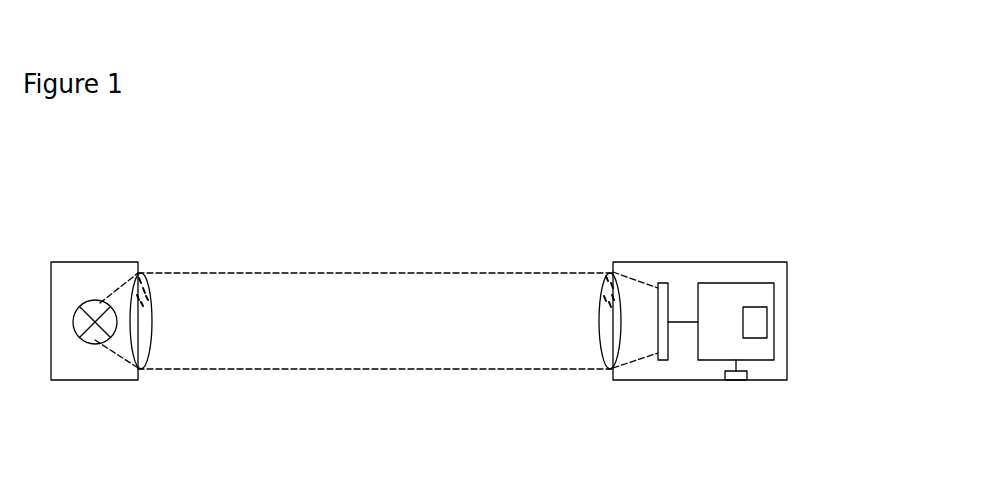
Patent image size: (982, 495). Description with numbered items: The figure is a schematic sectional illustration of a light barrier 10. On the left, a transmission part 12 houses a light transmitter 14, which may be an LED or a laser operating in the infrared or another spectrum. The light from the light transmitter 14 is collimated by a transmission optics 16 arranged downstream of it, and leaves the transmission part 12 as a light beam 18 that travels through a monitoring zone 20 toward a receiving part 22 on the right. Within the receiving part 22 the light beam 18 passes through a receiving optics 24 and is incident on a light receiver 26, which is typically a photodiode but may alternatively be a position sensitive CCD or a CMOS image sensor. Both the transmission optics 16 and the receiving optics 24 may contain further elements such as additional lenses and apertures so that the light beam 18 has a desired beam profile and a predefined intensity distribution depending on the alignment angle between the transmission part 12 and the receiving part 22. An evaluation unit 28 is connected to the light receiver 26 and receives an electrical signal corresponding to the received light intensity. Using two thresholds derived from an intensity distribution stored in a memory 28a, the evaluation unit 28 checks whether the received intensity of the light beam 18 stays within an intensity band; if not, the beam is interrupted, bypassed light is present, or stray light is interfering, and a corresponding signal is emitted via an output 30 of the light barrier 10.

The light barrier 10 is at (498, 203).
The transmission part 12 is at (83, 262).
The light transmitter 14 is at (83, 338).
The transmission optics 16 is at (148, 350).
The light beam 18 is at (270, 273).
The monitoring zone 20 is at (348, 302).
The receiving part 22 is at (635, 262).
The receiving optics 24 is at (602, 352).
The light receiver 26 is at (667, 350).
The evaluation unit 28 is at (733, 283).
The memory 28a is at (753, 328).
The output 30 is at (733, 381).